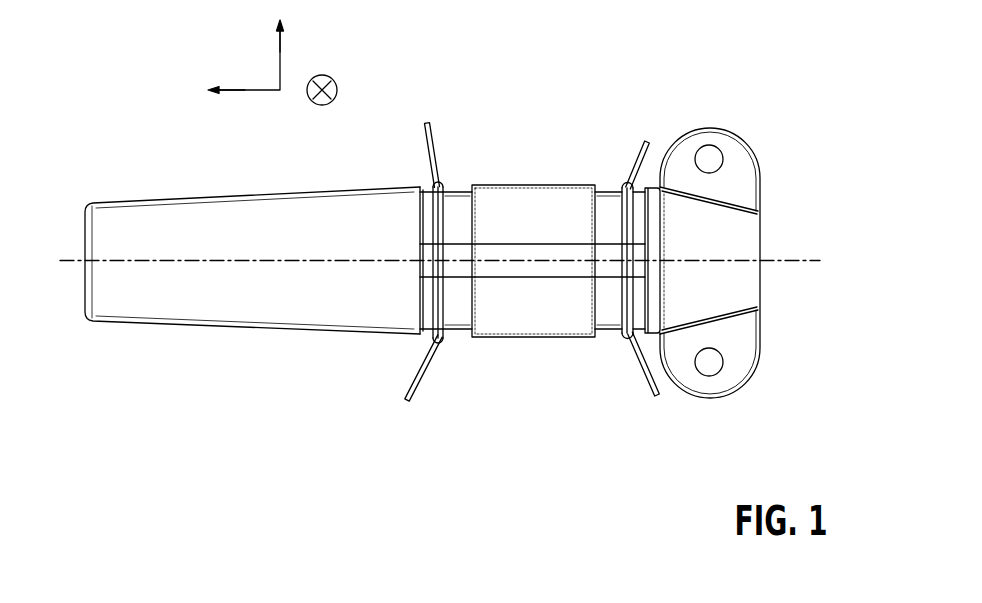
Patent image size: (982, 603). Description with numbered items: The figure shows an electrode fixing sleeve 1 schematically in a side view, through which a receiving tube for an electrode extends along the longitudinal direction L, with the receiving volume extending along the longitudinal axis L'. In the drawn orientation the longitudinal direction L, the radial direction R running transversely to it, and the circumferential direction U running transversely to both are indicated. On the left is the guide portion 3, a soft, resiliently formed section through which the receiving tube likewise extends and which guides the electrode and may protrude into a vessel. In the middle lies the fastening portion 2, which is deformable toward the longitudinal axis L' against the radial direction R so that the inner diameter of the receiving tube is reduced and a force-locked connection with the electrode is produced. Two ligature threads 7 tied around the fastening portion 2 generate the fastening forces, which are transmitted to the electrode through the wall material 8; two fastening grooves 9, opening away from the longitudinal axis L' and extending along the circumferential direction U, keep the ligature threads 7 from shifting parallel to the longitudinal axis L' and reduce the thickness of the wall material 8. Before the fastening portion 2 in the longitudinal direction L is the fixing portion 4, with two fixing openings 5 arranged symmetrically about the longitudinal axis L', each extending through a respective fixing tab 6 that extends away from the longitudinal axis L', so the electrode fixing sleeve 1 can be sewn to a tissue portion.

The electrode fixing sleeve 1 is at (167, 130).
The fastening portion 2 is at (420, 338).
The guide portion 3 is at (175, 373).
The fixing portion 4 is at (750, 80).
The fixing opening 5 is at (707, 145).
The fixing tab 6 is at (760, 180).
The ligature thread 7 is at (428, 122).
The wall material 8 is at (530, 185).
The fastening groove 9 is at (460, 157).
The radial direction R is at (280, 52).
The longitudinal direction L is at (226, 62).
The circumferential direction U is at (322, 75).
The longitudinal axis L' is at (442, 226).